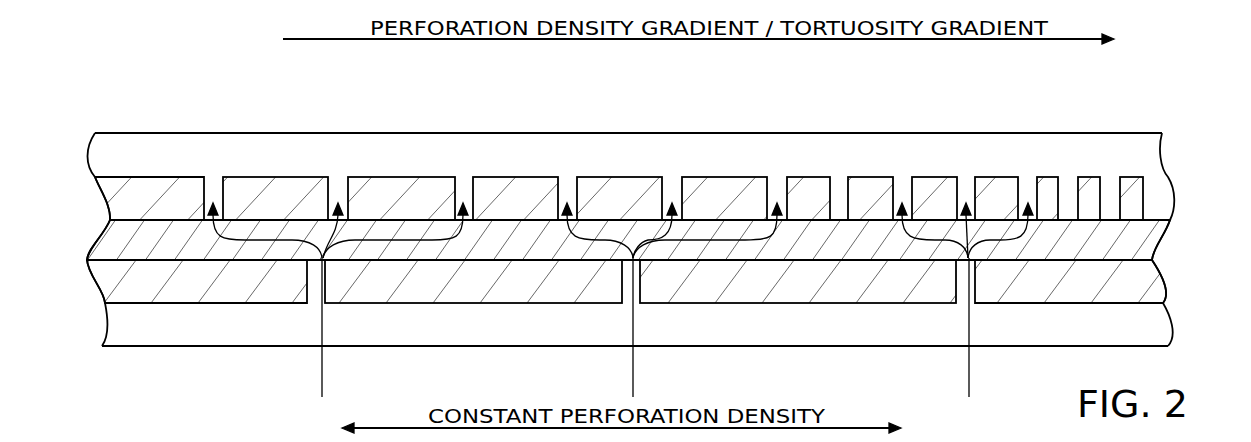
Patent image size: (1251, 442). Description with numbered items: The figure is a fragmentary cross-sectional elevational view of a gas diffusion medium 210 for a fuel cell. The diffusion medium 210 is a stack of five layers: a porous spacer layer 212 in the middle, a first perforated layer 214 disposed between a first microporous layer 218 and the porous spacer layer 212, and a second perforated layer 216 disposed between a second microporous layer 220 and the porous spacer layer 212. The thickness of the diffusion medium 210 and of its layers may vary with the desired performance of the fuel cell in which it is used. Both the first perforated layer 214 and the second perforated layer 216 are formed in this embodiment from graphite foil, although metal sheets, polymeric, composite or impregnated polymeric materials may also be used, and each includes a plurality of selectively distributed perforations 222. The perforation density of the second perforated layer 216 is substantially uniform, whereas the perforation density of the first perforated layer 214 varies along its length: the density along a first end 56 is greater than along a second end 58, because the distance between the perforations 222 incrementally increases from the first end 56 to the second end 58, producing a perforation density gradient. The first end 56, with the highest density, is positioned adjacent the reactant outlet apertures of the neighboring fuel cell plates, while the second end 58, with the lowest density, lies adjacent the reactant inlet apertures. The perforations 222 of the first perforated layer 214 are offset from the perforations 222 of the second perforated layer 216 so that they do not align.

The diffusion medium 210 is at (1157, 100).
The porous spacer layer 212 is at (1160, 233).
The first perforated layer 214 is at (1133, 190).
The second perforated layer 216 is at (1147, 282).
The first microporous layer 218 is at (1145, 142).
The second microporous layer 220 is at (1157, 323).
The perforations 222 is at (208, 192).
The first end 56 is at (1055, 106).
The second end 58 is at (96, 108).